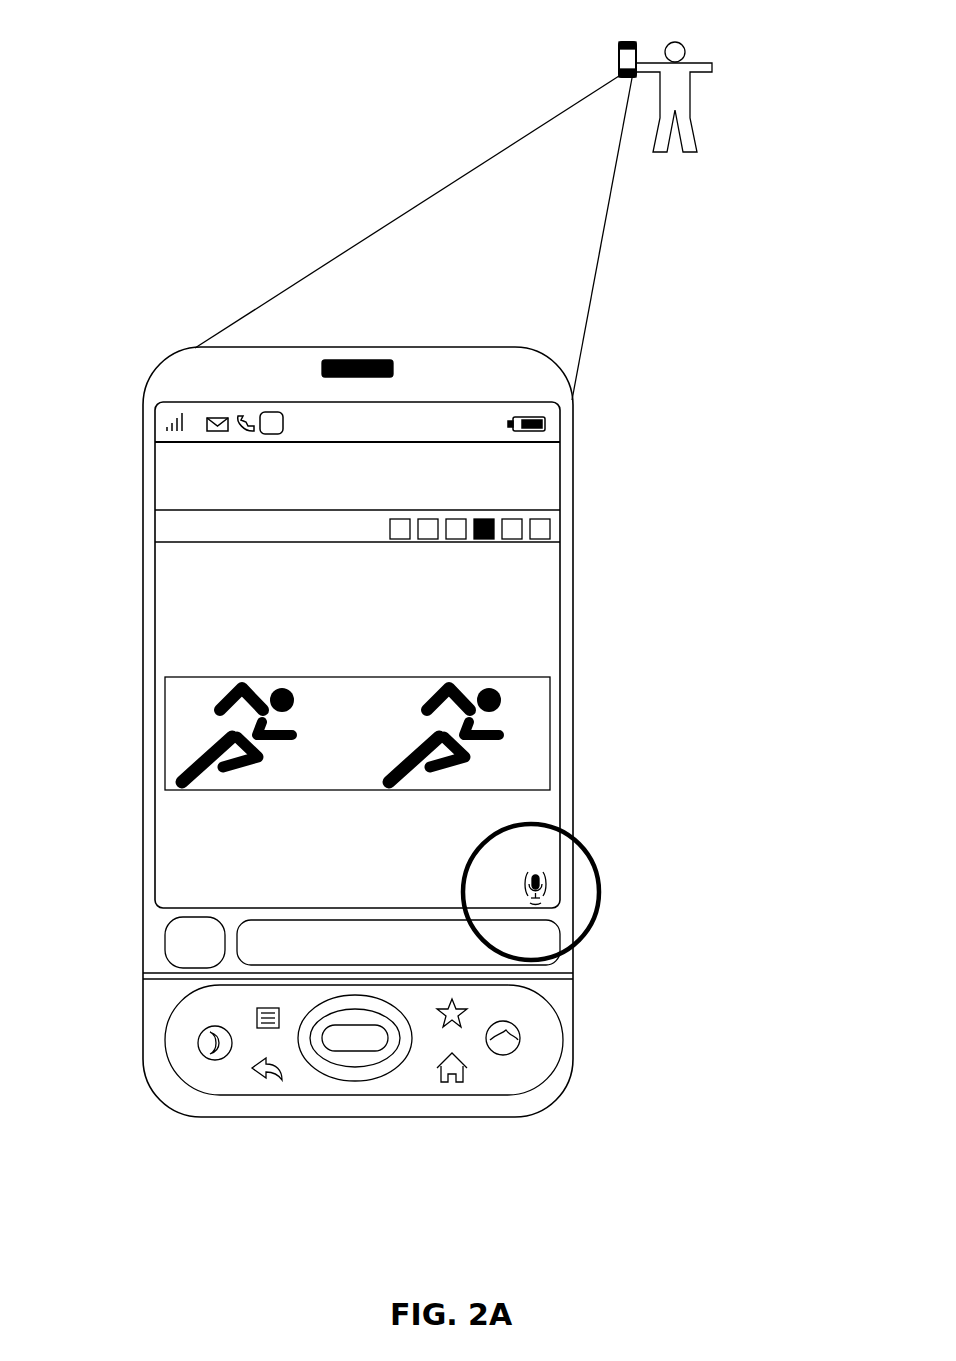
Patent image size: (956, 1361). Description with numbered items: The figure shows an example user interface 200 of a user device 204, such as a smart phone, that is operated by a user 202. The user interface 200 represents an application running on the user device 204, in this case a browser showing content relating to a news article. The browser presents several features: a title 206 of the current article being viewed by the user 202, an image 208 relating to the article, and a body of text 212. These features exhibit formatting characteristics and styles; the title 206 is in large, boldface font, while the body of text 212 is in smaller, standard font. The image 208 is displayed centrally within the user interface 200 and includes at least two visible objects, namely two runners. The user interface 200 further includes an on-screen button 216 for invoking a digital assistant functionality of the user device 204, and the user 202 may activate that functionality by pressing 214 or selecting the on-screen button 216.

The user interface 200 is at (380, 732).
The user 202 is at (699, 48).
The user device 204 is at (612, 44).
The title 206 is at (141, 595).
The image 208 is at (163, 745).
The body of text 212 is at (161, 843).
The pressing 214 is at (588, 850).
The on-screen button 216 is at (550, 896).